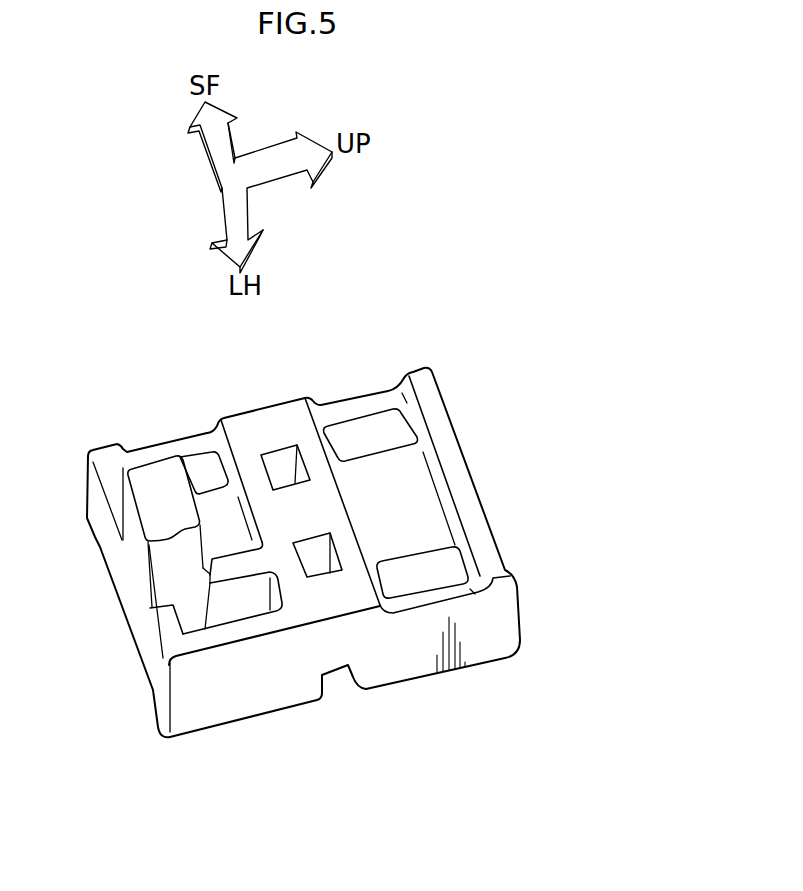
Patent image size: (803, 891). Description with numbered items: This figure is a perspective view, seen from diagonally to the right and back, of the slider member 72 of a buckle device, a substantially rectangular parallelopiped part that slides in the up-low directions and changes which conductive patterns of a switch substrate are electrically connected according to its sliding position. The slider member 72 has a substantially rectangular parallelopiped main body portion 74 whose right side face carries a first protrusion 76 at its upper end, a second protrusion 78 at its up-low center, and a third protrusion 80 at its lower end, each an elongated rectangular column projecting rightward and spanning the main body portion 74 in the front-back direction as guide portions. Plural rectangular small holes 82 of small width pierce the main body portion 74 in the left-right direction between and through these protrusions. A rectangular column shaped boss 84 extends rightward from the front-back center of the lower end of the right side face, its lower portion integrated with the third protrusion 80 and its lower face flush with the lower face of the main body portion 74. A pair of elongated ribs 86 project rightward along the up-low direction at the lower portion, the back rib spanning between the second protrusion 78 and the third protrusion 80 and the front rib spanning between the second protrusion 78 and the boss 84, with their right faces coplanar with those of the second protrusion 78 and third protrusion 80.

The slider member 72 is at (123, 370).
The main body portion 74 is at (398, 690).
The first protrusion 76 is at (430, 380).
The second protrusion 78 is at (248, 420).
The third protrusion 80 is at (103, 455).
The small holes 82 is at (200, 470).
The boss 84 is at (153, 458).
The ribs 86 is at (235, 567).